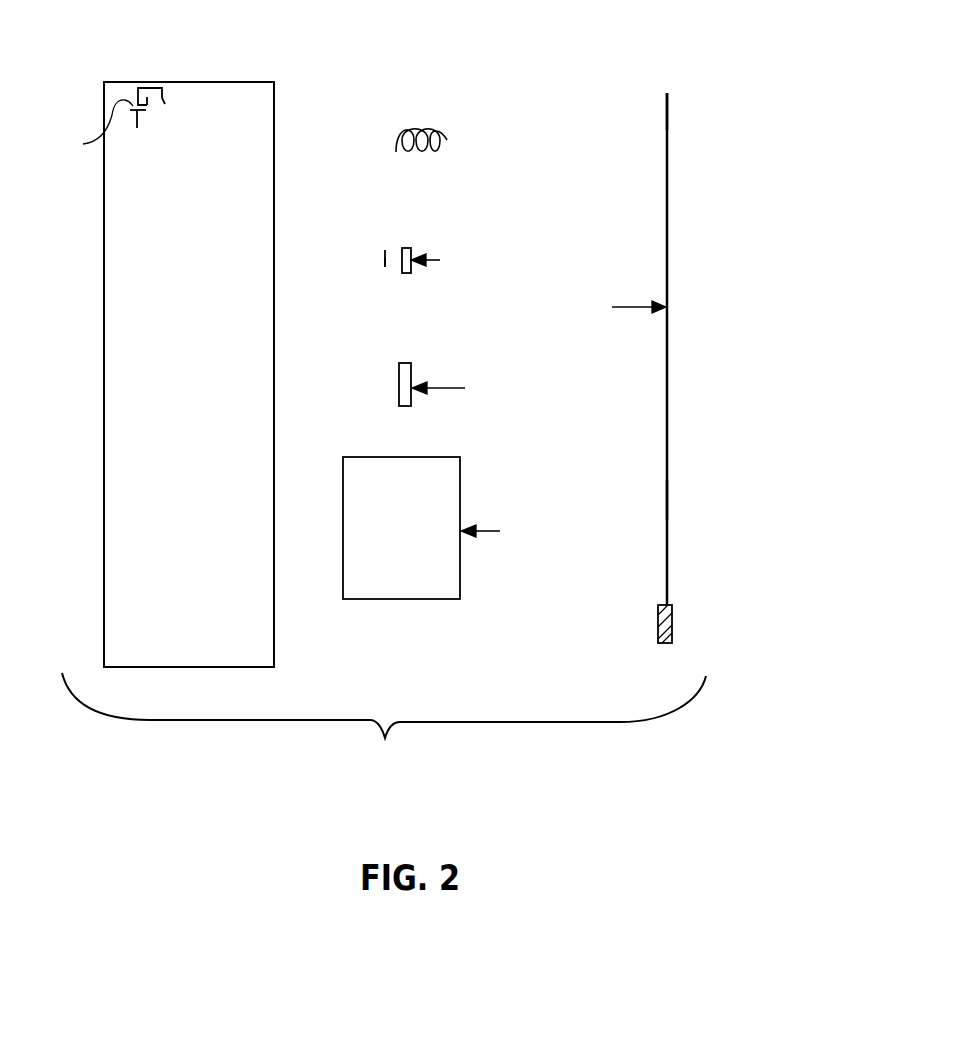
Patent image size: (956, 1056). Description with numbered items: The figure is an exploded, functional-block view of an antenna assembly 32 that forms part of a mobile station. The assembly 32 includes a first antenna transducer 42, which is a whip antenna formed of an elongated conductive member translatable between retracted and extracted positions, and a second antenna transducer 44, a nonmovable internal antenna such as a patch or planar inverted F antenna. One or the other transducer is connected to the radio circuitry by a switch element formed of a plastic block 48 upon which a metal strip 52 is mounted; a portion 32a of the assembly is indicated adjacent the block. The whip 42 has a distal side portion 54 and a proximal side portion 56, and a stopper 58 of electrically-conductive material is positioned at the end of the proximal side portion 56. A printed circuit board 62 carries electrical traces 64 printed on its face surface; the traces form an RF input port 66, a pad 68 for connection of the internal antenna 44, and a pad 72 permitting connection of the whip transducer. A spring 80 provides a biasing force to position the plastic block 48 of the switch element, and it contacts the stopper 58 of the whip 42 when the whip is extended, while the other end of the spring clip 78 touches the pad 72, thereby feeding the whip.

The antenna assembly 32 is at (468, 33).
The antenna assembly portion 32a is at (392, 252).
The first antenna transducer 42 is at (689, 213).
The second antenna transducer 44 is at (461, 482).
The plastic block 48 is at (392, 266).
The metal strip 52 is at (409, 248).
The distal side portion 54 is at (669, 118).
The proximal side portion 56 is at (667, 505).
The stopper 58 is at (673, 622).
The printed circuit board 62 is at (276, 386).
The electrical traces 64 is at (153, 88).
The RF input port 66 is at (141, 118).
The pad 68 is at (163, 99).
The pad 72 is at (95, 128).
The spring clip 78 is at (413, 372).
The spring 80 is at (447, 140).